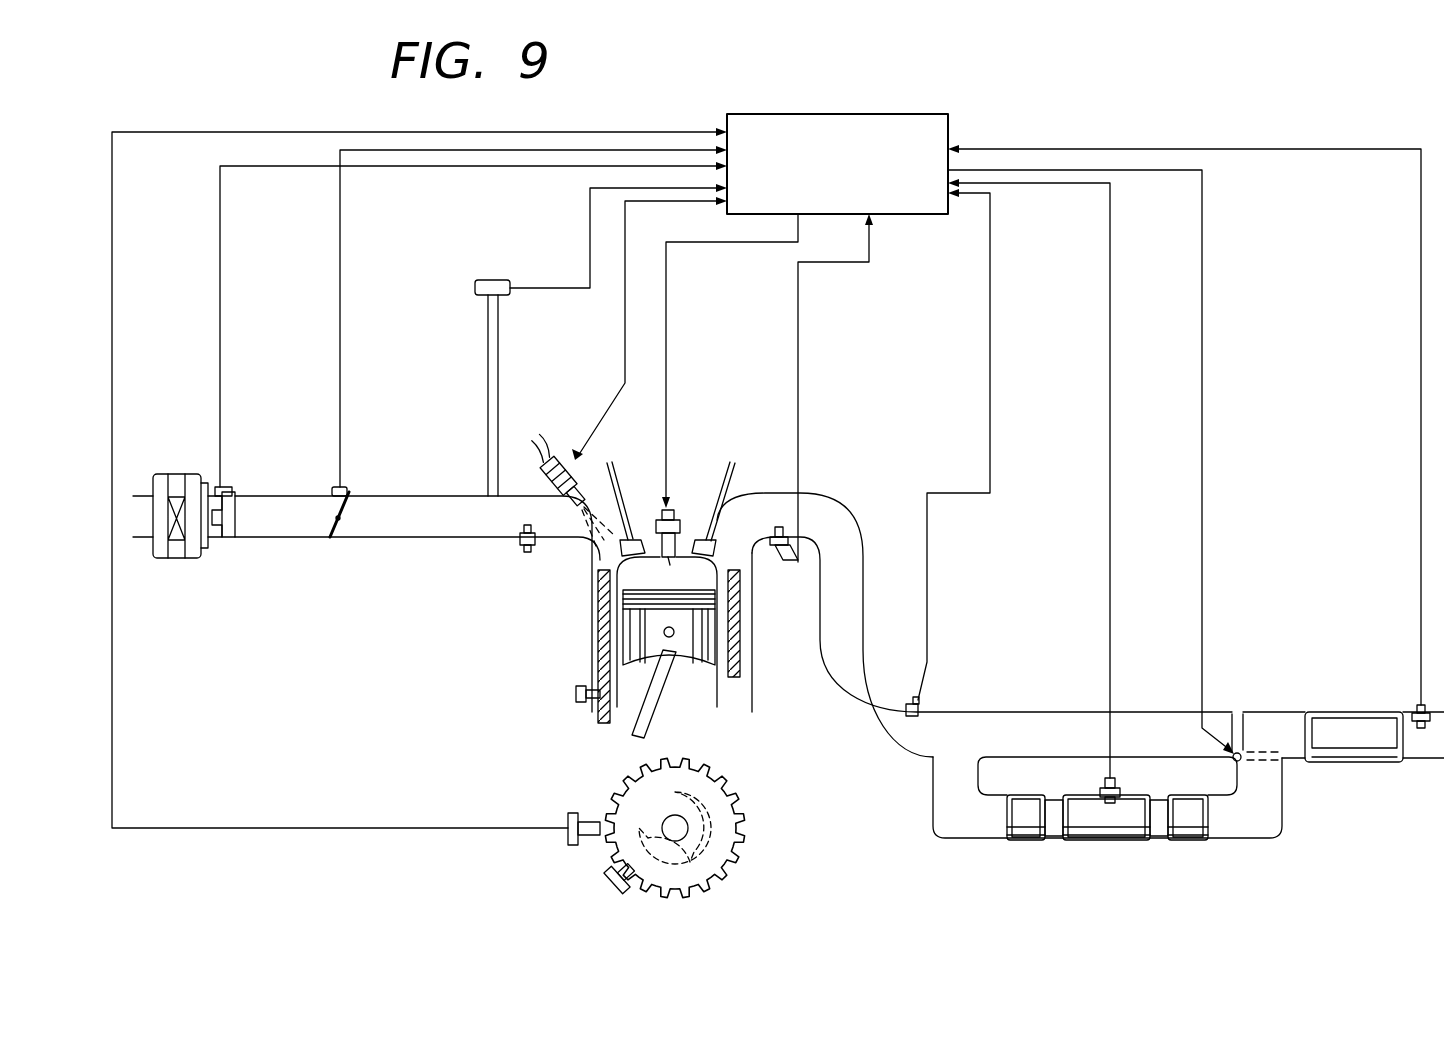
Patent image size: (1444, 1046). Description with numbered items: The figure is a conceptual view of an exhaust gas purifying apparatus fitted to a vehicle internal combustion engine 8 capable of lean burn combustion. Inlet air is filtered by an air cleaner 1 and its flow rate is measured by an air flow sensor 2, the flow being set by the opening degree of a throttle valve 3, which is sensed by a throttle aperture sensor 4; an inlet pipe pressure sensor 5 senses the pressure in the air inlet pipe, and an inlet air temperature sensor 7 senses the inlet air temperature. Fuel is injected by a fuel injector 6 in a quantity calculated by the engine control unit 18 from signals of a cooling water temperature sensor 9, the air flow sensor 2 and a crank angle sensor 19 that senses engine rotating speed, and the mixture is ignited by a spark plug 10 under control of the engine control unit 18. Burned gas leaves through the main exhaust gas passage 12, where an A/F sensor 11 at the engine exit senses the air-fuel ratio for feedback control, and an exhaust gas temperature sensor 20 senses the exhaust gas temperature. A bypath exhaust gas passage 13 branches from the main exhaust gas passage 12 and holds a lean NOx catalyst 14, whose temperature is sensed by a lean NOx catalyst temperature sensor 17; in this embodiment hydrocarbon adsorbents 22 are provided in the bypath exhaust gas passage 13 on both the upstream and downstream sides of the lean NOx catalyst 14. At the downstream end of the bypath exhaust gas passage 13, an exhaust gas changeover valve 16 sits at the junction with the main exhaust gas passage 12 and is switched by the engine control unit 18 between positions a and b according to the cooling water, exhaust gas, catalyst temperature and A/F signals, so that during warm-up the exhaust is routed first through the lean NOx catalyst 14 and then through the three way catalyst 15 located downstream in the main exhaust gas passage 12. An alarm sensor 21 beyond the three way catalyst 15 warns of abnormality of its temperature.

The air cleaner 1 is at (175, 560).
The air flow sensor 2 is at (219, 548).
The throttle valve 3 is at (344, 535).
The throttle aperture sensor 4 is at (348, 486).
The inlet pipe pressure sensor 5 is at (495, 278).
The fuel injector 6 is at (560, 452).
The inlet air temperature sensor 7 is at (515, 558).
The internal combustion engine 8 is at (753, 695).
The cooling water temperature sensor 9 is at (576, 693).
The spark plug 10 is at (660, 505).
The A/F sensor 11 is at (780, 550).
The main exhaust gas passage 12 is at (868, 740).
The bypath exhaust gas passage 13 is at (933, 806).
The lean NOx catalyst 14 is at (1090, 848).
The three way catalyst 15 is at (1360, 763).
The exhaust gas changeover valve 16 is at (1243, 735).
The lean NOx catalyst temperature sensor 17 is at (1110, 803).
The engine control unit 18 is at (948, 114).
The crank angle sensor 19 is at (592, 815).
The exhaust gas temperature sensor 20 is at (920, 700).
The alarm sensor 21 is at (1415, 705).
The hydrocarbon adsorbent 22 is at (1032, 845).